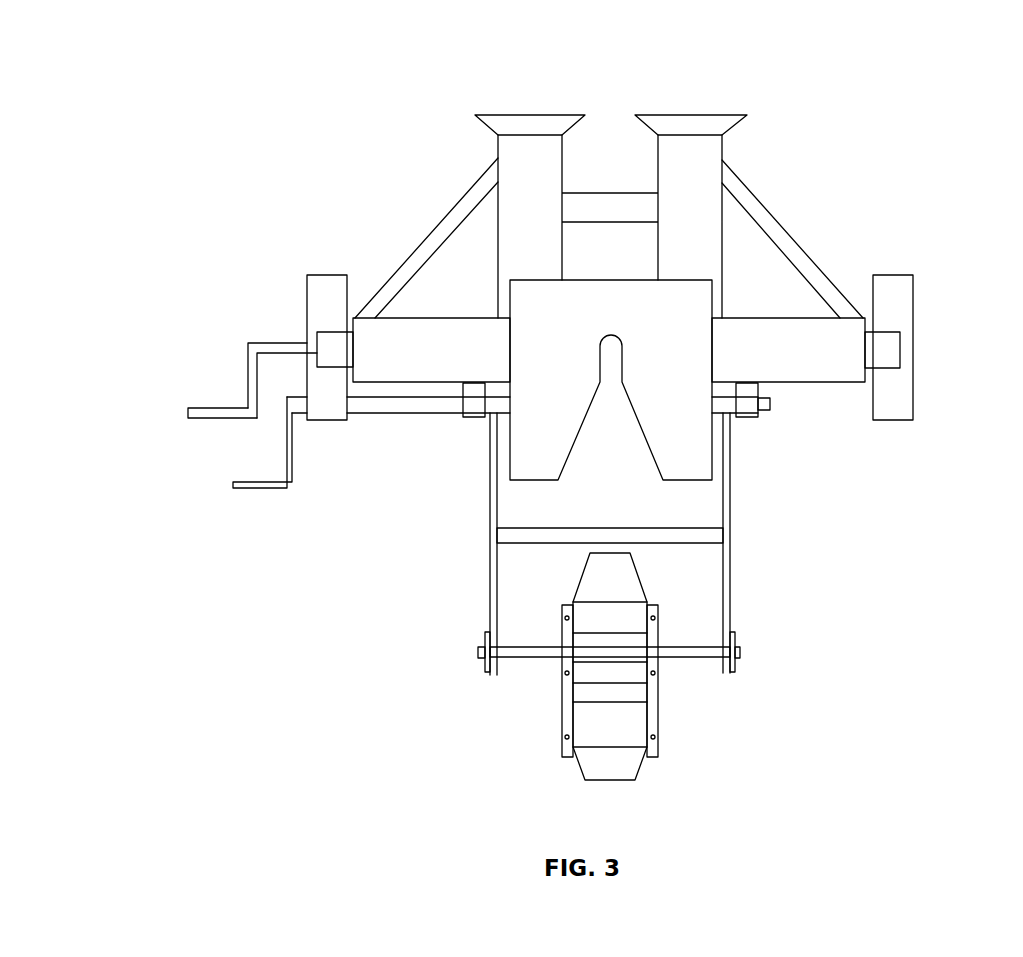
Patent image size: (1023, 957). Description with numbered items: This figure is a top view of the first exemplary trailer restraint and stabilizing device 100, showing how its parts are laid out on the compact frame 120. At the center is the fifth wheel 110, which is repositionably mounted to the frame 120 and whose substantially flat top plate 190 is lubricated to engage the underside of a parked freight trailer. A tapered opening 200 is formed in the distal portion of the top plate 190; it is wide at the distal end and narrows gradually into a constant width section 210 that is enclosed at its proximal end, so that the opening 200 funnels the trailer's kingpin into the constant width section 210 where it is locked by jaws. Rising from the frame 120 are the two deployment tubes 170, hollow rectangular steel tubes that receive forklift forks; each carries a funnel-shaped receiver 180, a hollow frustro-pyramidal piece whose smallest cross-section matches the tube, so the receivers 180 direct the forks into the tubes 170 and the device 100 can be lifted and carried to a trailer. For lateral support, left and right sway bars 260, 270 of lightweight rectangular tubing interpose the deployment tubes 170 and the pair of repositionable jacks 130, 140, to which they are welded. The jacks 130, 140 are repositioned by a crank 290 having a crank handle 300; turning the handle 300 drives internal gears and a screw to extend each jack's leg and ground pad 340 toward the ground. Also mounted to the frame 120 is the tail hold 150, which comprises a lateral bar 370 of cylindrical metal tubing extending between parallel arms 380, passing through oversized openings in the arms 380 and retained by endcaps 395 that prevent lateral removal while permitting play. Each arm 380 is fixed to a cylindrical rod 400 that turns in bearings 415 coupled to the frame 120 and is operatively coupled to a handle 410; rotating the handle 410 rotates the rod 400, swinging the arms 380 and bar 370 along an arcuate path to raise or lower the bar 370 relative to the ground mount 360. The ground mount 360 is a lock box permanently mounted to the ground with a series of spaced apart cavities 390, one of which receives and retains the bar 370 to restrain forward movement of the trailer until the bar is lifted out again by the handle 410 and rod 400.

The trailer restraint and stabilizing device 100 is at (930, 117).
The fifth wheel 110 is at (606, 438).
The compact frame 120 is at (803, 239).
The repositionable jack 130 is at (902, 350).
The repositionable jack 140 is at (328, 343).
The tail hold 150 is at (718, 537).
The deployment tubes 170 is at (567, 105).
The funnel-shaped receivers 180 is at (510, 127).
The top plate 190 is at (577, 318).
The opening 200 is at (590, 462).
The constant width section 210 is at (452, 361).
The sway bar 260 is at (807, 255).
The sway bar 270 is at (455, 215).
The crank 290 is at (225, 410).
The crank handle 300 is at (210, 418).
The ground pad 340 is at (322, 274).
The ground mount 360 is at (629, 672).
The lateral bar 370 is at (700, 655).
The parallel arms 380 is at (487, 505).
The cavities 390 is at (578, 660).
The endcaps 395 is at (737, 665).
The cylindrical rod 400 is at (393, 420).
The handle 410 is at (252, 493).
The bearings 415 is at (475, 417).